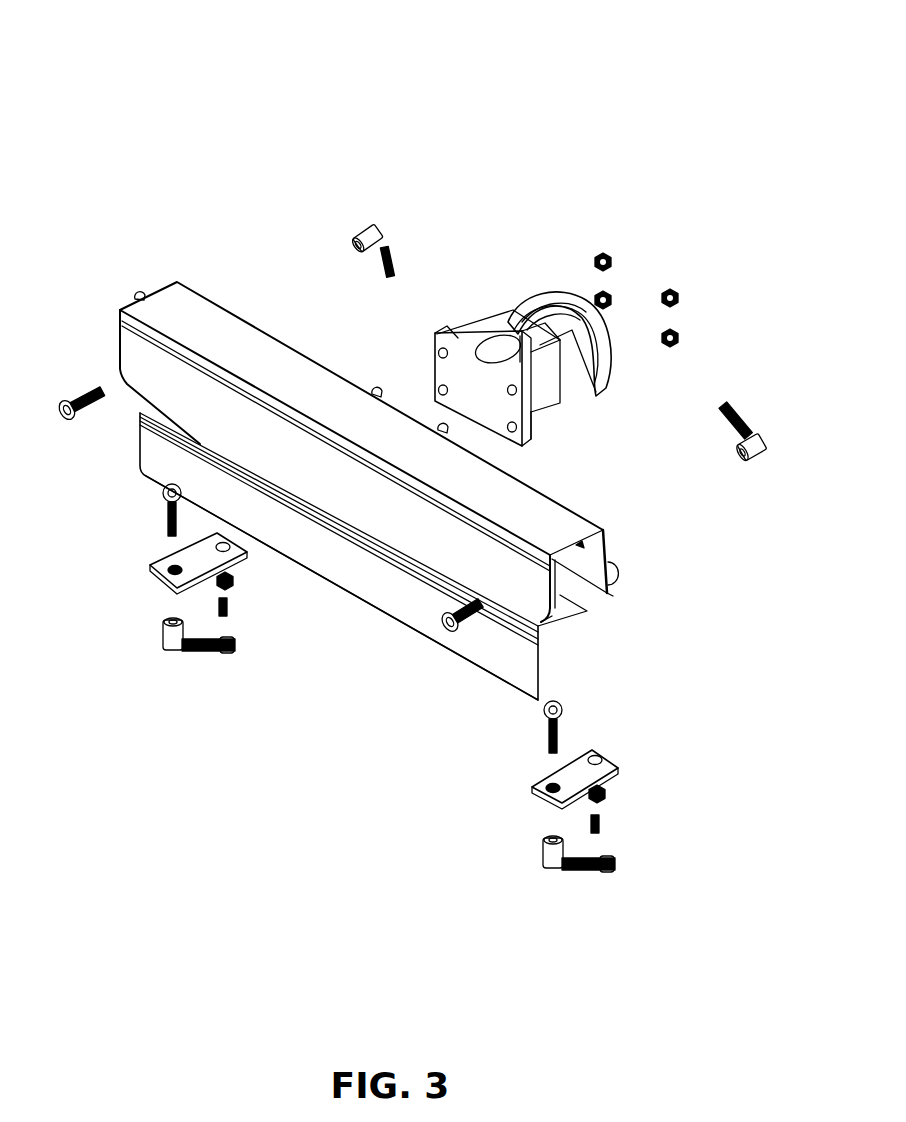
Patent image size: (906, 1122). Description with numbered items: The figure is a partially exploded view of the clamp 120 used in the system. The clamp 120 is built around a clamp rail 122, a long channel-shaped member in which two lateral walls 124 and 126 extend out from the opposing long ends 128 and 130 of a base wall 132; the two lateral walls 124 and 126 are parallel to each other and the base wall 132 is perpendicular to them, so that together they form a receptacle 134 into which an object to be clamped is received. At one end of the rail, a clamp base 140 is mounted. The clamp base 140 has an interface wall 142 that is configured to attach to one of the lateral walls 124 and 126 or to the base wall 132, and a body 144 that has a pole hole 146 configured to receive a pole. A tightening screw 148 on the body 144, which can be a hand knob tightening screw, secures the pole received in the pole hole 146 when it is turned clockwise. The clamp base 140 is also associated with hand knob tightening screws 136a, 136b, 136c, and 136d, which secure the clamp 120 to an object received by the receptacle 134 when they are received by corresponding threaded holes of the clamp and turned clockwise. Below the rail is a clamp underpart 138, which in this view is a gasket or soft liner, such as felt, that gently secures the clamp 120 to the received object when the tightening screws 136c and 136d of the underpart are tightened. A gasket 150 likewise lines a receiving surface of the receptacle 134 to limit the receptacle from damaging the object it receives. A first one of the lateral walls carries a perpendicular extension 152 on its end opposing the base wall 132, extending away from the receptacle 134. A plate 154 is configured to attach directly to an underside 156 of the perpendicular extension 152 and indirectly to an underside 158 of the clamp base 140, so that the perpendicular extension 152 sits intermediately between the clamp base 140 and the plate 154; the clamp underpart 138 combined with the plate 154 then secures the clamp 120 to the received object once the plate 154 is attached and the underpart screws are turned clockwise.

The clamp 120 is at (128, 63).
The clamp rail 122 is at (108, 280).
The lateral wall 124 is at (607, 550).
The lateral wall 126 is at (413, 580).
The long end 128 is at (168, 347).
The long end 130 is at (240, 318).
The base wall 132 is at (297, 385).
The receptacle 134 is at (612, 618).
The hand knob tightening screw 136a is at (367, 222).
The hand knob tightening screw 136b is at (743, 418).
The hand knob tightening screw 136c is at (580, 880).
The hand knob tightening screw 136d is at (167, 655).
The clamp underpart 138 is at (570, 623).
The clamp base 140 is at (515, 262).
The interface wall 142 is at (515, 410).
The body 144 is at (548, 383).
The pole hole 146 is at (486, 303).
The tightening screw 148 is at (557, 305).
The gasket 150 is at (488, 645).
The perpendicular extension 152 is at (622, 572).
The plate 154 is at (618, 760).
The underside of the perpendicular extension 156 is at (616, 592).
The underside of the clamp base 158 is at (542, 410).